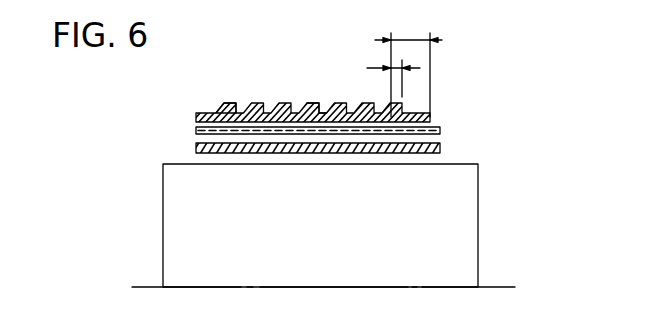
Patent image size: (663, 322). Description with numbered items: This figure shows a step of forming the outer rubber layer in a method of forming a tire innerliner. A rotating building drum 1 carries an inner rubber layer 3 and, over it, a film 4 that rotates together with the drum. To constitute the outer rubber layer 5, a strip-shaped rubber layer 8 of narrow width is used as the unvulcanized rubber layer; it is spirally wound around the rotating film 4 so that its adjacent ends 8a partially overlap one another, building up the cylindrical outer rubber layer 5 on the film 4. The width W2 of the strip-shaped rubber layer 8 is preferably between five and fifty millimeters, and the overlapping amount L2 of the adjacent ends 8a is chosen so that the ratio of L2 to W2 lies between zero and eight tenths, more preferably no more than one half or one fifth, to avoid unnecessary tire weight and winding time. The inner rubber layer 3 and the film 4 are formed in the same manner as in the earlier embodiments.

The building drum 1 is at (465, 222).
The inner rubber layer 3 is at (440, 147).
The film 4 is at (436, 125).
The outer rubber layer 5 is at (316, 104).
The strip-shaped rubber layer 8 is at (282, 103).
The adjacent ends 8a is at (226, 104).
The width of the strip-shaped rubber layer W2 is at (408, 64).
The overlapping amount of the ends L2 is at (379, 78).